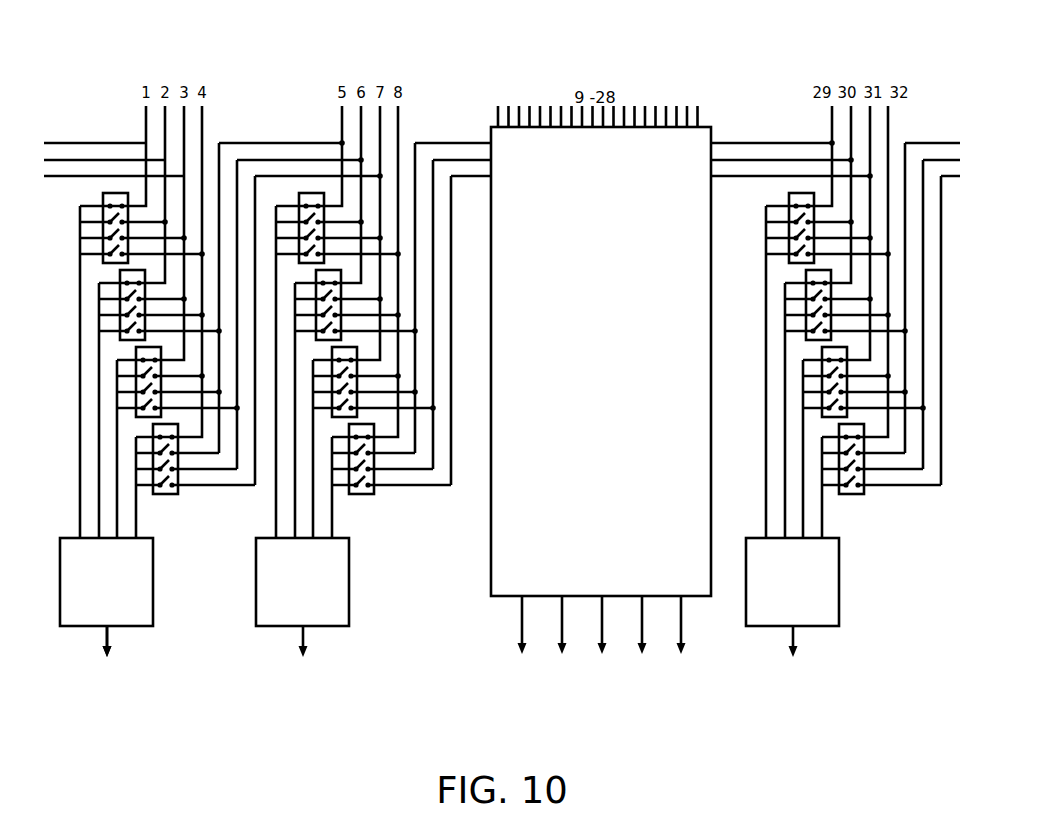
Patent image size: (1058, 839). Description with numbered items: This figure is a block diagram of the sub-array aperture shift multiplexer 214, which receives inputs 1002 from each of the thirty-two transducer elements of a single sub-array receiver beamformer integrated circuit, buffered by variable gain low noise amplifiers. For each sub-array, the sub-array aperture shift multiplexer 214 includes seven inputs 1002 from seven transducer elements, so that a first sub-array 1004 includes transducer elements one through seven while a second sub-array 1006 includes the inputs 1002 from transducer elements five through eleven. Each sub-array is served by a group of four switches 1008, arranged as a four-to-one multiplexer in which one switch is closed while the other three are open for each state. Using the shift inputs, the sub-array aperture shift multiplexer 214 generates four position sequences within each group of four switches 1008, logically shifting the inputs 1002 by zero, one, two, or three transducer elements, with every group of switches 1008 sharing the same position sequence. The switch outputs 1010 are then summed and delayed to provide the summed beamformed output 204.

The sub-array aperture shift multiplexer 214 is at (159, 60).
The inputs 1002 is at (128, 118).
The switches 1008 is at (296, 151).
The first sub-array 1004 is at (150, 651).
The second sub-array 1006 is at (335, 632).
The switch outputs 1010 is at (136, 512).
The summed beamformed output 204 is at (105, 633).